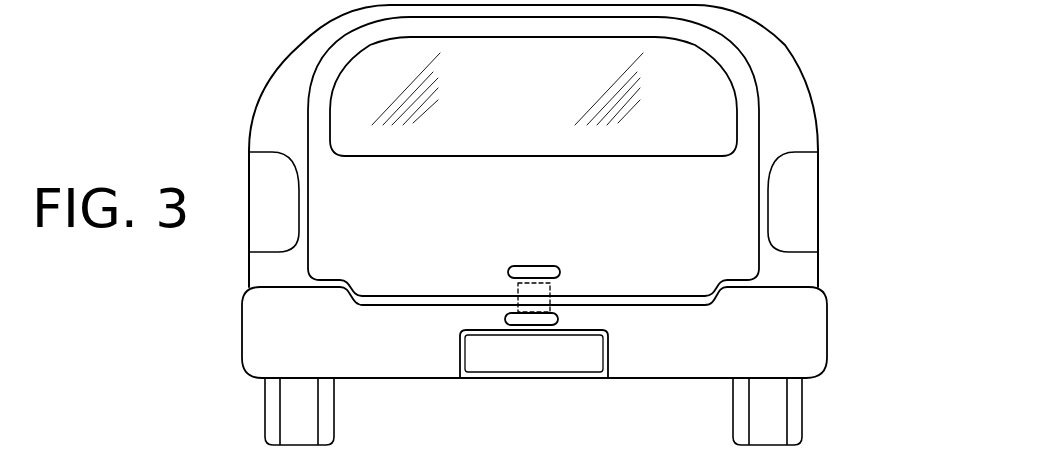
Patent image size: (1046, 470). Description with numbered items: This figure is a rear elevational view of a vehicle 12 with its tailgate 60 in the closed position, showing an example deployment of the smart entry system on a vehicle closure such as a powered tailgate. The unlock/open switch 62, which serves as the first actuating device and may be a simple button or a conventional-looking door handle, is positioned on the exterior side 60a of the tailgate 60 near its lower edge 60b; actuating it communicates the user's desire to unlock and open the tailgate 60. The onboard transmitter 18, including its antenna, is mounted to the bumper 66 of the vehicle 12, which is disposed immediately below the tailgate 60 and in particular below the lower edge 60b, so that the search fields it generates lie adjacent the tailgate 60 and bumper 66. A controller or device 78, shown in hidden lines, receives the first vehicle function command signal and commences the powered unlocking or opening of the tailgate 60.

The vehicle 12 is at (796, 57).
The tailgate 60 is at (712, 218).
The exterior side of the tailgate 60a is at (568, 204).
The lower edge of the tailgate 60b is at (662, 298).
The unlock/open switch 62 is at (547, 265).
The controller or device 78 is at (545, 291).
The onboard transmitter 18 is at (505, 319).
The bumper 66 is at (667, 363).